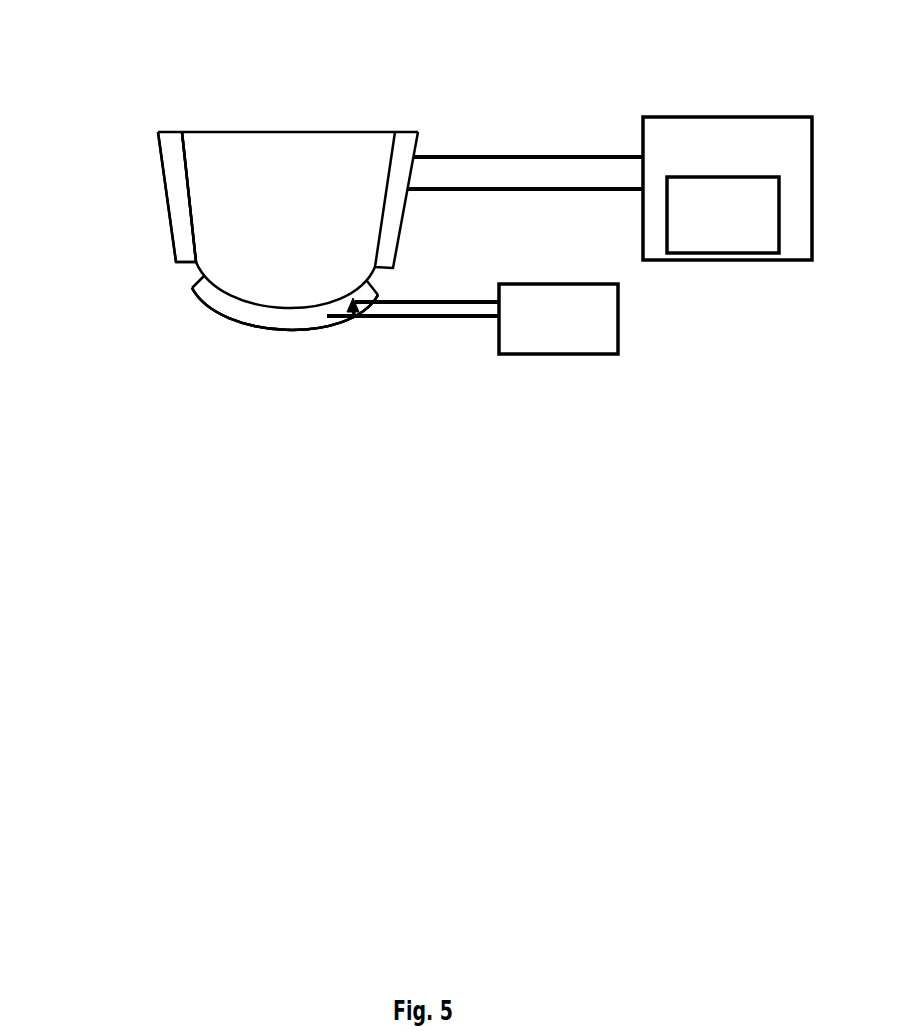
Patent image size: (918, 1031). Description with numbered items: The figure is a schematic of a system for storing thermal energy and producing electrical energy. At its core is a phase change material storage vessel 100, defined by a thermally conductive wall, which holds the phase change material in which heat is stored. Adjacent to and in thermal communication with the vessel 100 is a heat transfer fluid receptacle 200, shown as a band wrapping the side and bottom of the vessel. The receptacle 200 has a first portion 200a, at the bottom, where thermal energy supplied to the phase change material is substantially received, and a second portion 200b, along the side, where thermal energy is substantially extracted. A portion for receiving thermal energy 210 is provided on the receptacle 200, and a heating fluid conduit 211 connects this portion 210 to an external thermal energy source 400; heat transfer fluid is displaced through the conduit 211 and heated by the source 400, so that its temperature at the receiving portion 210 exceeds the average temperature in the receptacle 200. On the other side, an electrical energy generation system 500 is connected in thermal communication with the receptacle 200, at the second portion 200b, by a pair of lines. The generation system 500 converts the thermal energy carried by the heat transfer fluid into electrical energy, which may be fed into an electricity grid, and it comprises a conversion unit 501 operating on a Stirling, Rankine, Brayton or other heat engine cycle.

The phase change material storage vessel 100 is at (318, 131).
The heat transfer fluid receptacle 200 is at (163, 188).
The first portion 200a is at (254, 327).
The second portion 200b is at (160, 152).
The portion for receiving thermal energy 210 is at (355, 314).
The heating fluid conduit 211 is at (450, 302).
The external thermal energy source 400 is at (578, 331).
The electrical energy generation system 500 is at (740, 147).
The conversion unit 501 is at (742, 230).